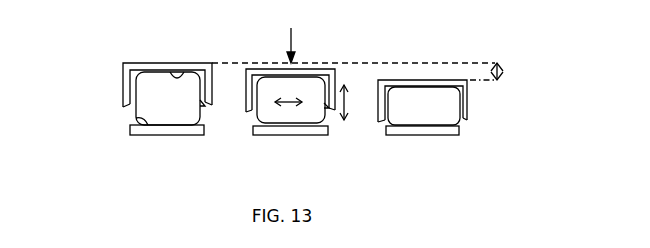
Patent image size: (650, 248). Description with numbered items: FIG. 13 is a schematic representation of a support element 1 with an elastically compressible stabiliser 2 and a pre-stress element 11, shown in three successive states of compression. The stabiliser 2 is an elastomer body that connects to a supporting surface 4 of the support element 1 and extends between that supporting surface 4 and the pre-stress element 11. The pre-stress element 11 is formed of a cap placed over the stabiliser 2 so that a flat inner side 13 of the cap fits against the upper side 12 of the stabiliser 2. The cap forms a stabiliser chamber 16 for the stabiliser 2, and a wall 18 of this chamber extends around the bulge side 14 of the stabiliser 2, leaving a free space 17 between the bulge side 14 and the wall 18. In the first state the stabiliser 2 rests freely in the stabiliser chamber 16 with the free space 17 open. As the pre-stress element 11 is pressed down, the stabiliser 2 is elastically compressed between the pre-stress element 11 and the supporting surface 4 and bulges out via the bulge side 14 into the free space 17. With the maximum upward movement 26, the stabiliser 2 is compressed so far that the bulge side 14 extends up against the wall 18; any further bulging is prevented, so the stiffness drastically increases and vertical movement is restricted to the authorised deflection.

The support element 1 is at (175, 133).
The elastically compressible stabiliser 2 is at (163, 88).
The supporting surface 4 is at (141, 121).
The pre-stress element 11 is at (167, 64).
The upper side 12 is at (143, 68).
The flat inner side 13 is at (183, 72).
The bulge side 14 is at (327, 108).
The stabiliser chamber 16 is at (336, 64).
The free space 17 is at (205, 106).
The wall 18 is at (467, 103).
The maximum upward movement 26 is at (505, 69).